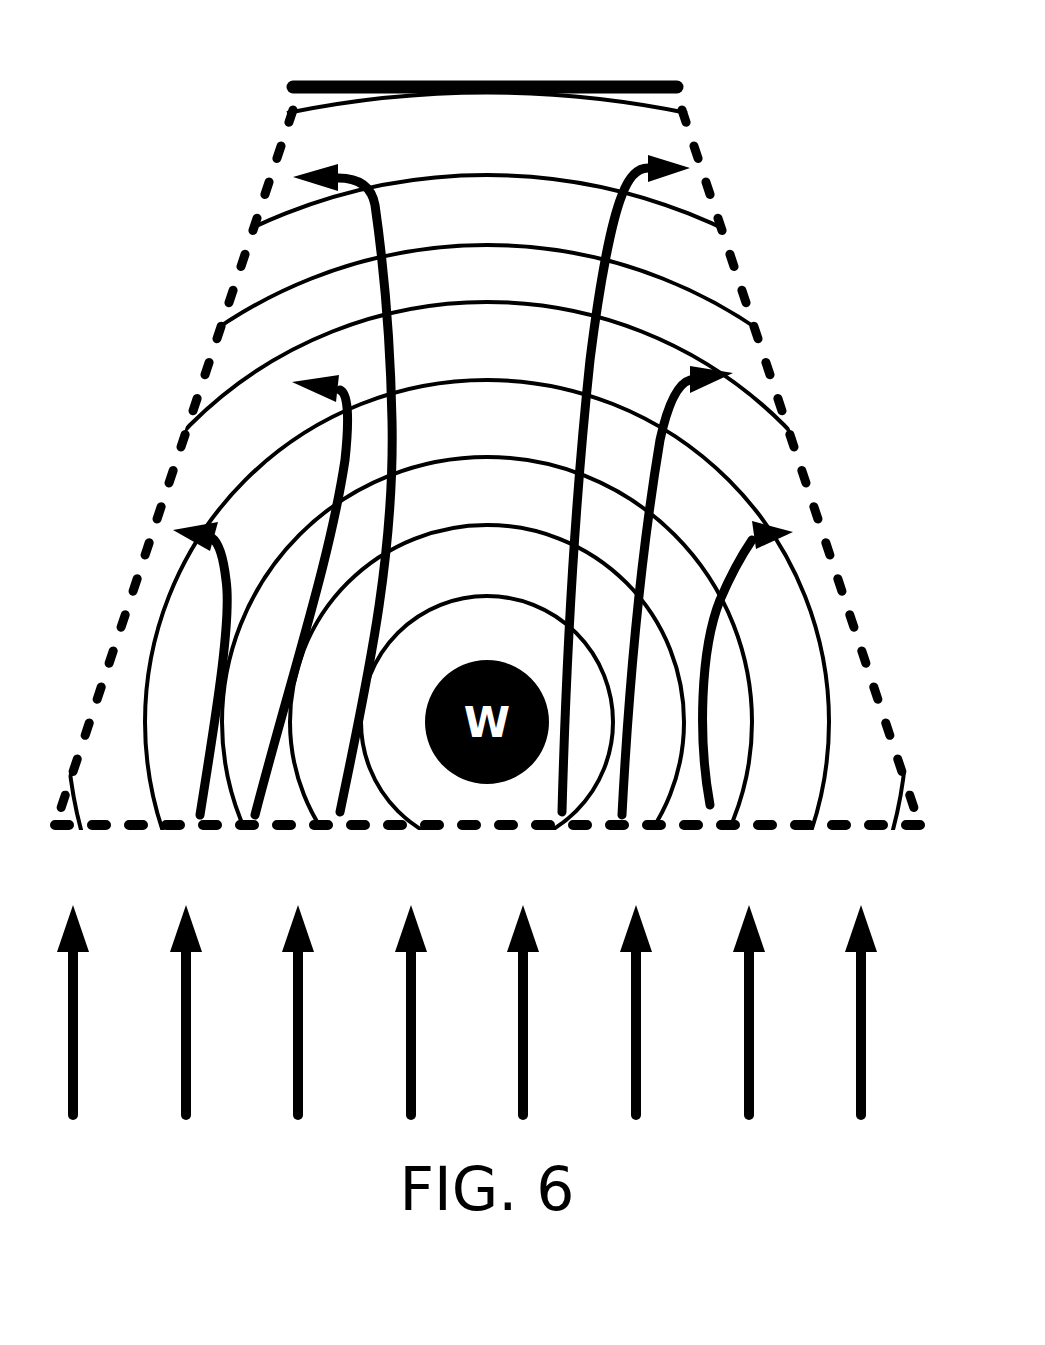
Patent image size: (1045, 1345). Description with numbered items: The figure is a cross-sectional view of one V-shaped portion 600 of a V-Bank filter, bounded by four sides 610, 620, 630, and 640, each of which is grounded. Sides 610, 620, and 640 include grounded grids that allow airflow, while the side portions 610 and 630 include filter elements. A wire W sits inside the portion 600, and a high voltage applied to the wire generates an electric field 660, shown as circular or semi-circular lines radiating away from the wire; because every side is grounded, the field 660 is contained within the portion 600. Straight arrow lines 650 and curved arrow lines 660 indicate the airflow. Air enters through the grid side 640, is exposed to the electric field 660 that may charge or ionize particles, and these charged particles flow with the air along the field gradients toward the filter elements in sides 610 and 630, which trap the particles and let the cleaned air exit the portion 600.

The portion of V-Bank filter 600 is at (230, 113).
The first side 610 is at (243, 243).
The second side 620 is at (507, 78).
The third side 630 is at (727, 257).
The fourth side 640 is at (483, 822).
The straight arrow lines 650 is at (467, 1010).
The electric field 660 is at (607, 187).